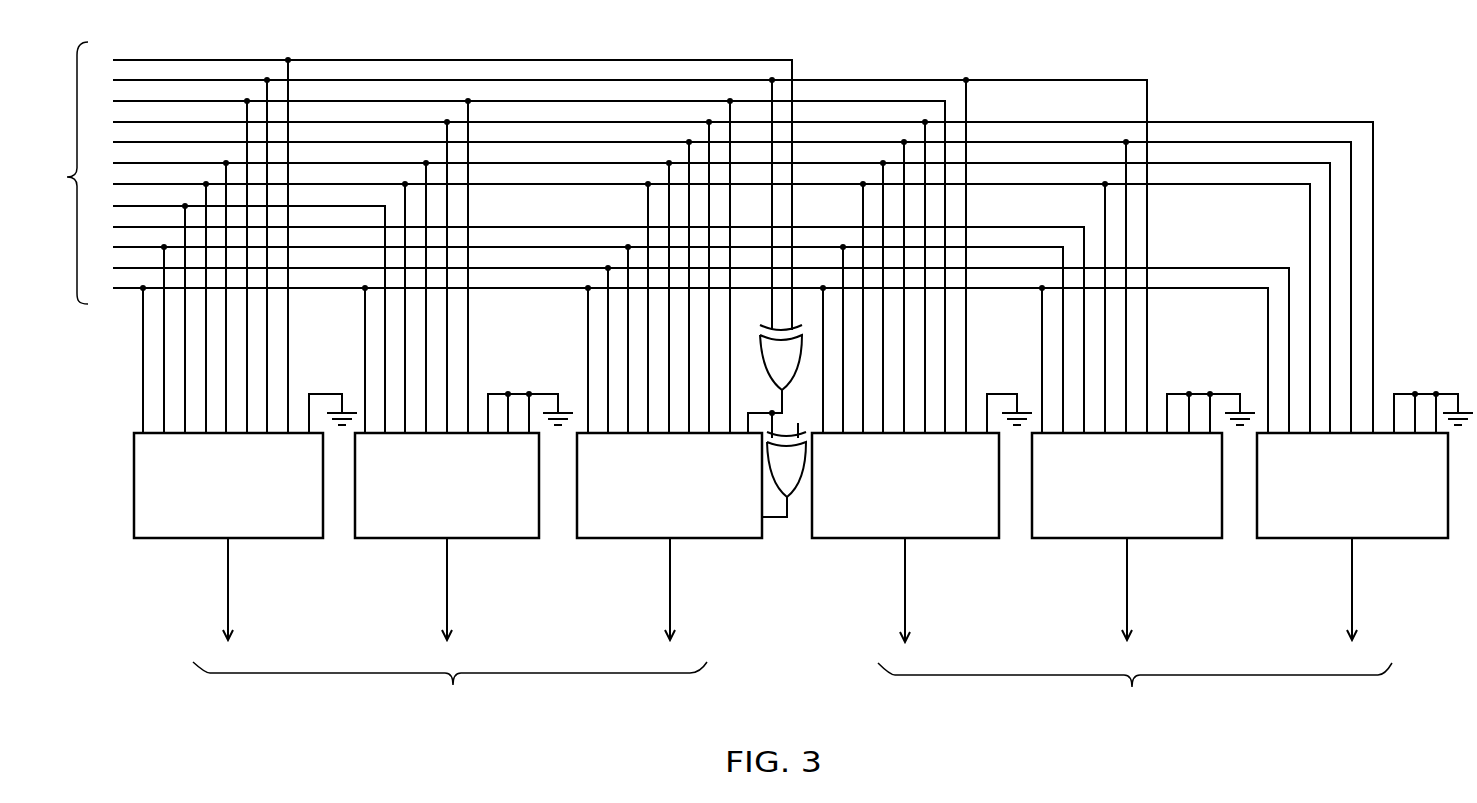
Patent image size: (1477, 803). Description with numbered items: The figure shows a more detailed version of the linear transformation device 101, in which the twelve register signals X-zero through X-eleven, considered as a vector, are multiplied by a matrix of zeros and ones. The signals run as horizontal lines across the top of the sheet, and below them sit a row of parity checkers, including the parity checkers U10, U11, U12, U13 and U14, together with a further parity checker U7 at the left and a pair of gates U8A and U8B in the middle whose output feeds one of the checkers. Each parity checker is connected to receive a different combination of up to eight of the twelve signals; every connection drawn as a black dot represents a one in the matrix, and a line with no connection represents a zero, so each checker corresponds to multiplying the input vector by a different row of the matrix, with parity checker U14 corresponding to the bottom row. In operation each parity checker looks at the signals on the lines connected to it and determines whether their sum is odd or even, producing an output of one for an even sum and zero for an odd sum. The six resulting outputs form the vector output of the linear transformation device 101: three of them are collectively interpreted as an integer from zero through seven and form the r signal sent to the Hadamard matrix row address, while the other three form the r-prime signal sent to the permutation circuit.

The linear transformation device 101 is at (718, 46).
The parity checker U7 is at (228, 485).
The parity checker U10 is at (447, 485).
The parity checker U11 is at (669, 485).
The parity checker U12 is at (905, 485).
The parity checker U13 is at (1127, 485).
The parity checker U14 is at (1352, 485).
The exclusive-OR gate U8A is at (781, 357).
The exclusive-OR gate U8B is at (786, 464).